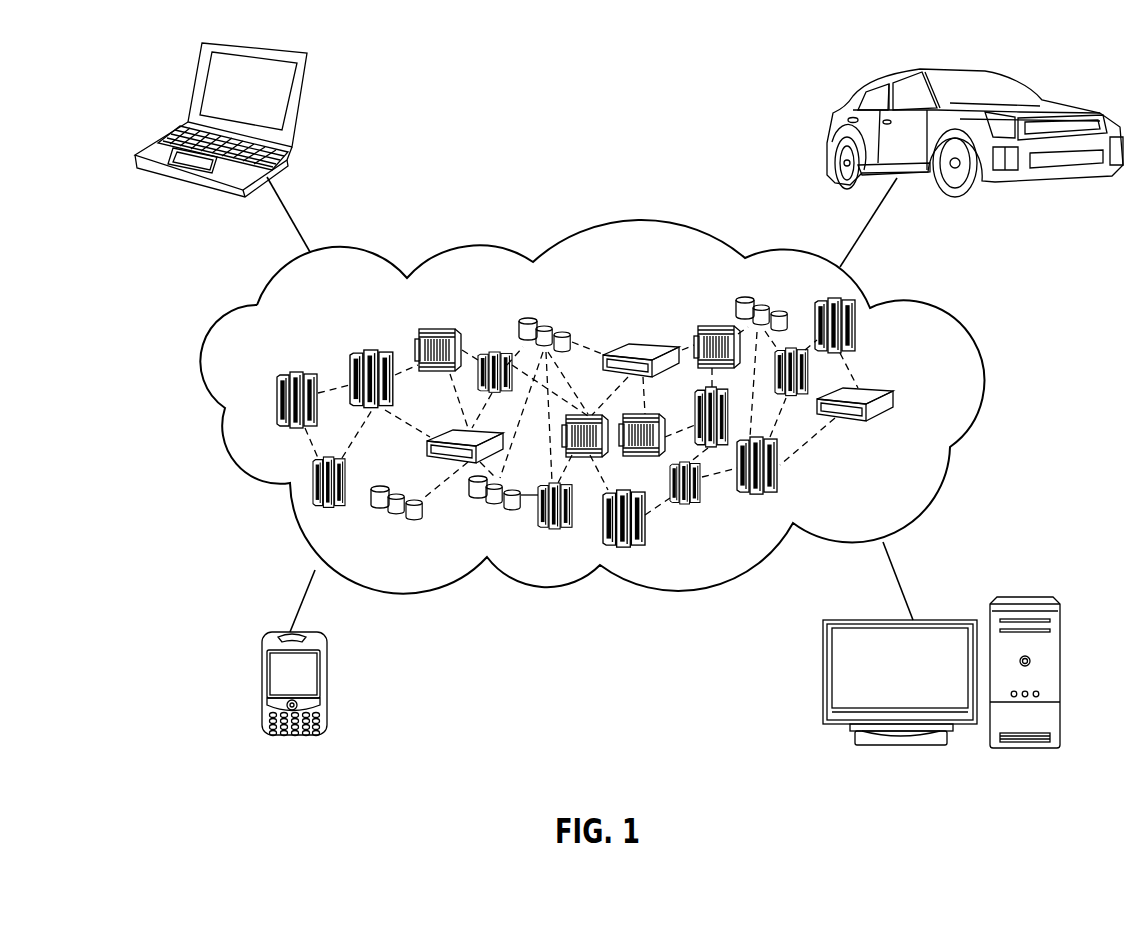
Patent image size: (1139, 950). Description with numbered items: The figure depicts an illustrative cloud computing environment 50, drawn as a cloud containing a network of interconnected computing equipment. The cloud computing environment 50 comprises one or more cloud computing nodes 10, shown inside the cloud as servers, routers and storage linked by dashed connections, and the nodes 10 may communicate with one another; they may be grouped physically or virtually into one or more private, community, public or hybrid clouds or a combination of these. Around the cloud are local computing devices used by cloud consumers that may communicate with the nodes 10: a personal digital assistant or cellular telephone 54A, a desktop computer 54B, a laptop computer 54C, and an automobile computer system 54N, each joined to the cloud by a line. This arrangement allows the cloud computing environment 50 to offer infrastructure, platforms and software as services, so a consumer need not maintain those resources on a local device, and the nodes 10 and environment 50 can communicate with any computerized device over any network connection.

The cloud computing nodes 10 is at (930, 400).
The cloud computing environment 50 is at (953, 320).
The personal digital assistant or cellular telephone 54A is at (262, 688).
The desktop computer 54B is at (1028, 595).
The laptop computer 54C is at (298, 107).
The automobile computer system 54N is at (835, 115).